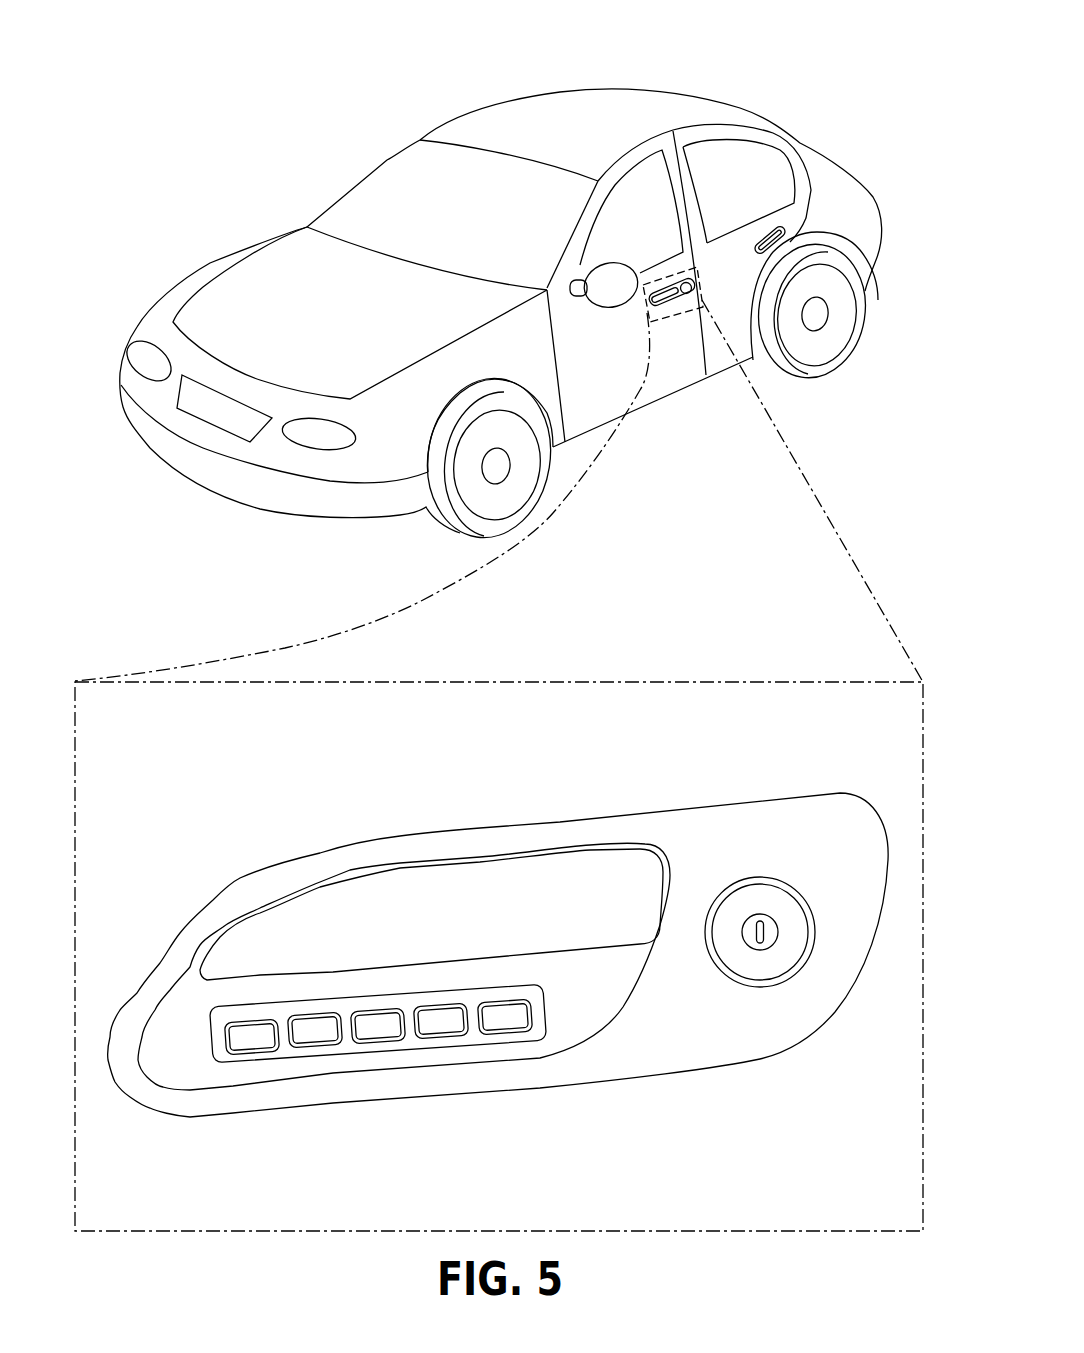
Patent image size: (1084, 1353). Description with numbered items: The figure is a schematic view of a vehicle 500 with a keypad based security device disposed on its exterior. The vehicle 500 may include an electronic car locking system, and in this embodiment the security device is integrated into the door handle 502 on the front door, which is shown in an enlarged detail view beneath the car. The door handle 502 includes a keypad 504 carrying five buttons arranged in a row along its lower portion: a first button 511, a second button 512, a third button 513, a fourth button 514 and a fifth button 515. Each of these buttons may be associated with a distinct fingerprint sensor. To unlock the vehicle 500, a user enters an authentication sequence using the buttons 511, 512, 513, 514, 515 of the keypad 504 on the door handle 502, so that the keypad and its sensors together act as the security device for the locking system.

The vehicle 500 is at (420, 98).
The door handle 502 is at (545, 830).
The keypad 504 is at (238, 1064).
The first button 511 is at (253, 1040).
The second button 512 is at (320, 1033).
The third button 513 is at (380, 1028).
The fourth button 514 is at (443, 1023).
The fifth button 515 is at (508, 1018).